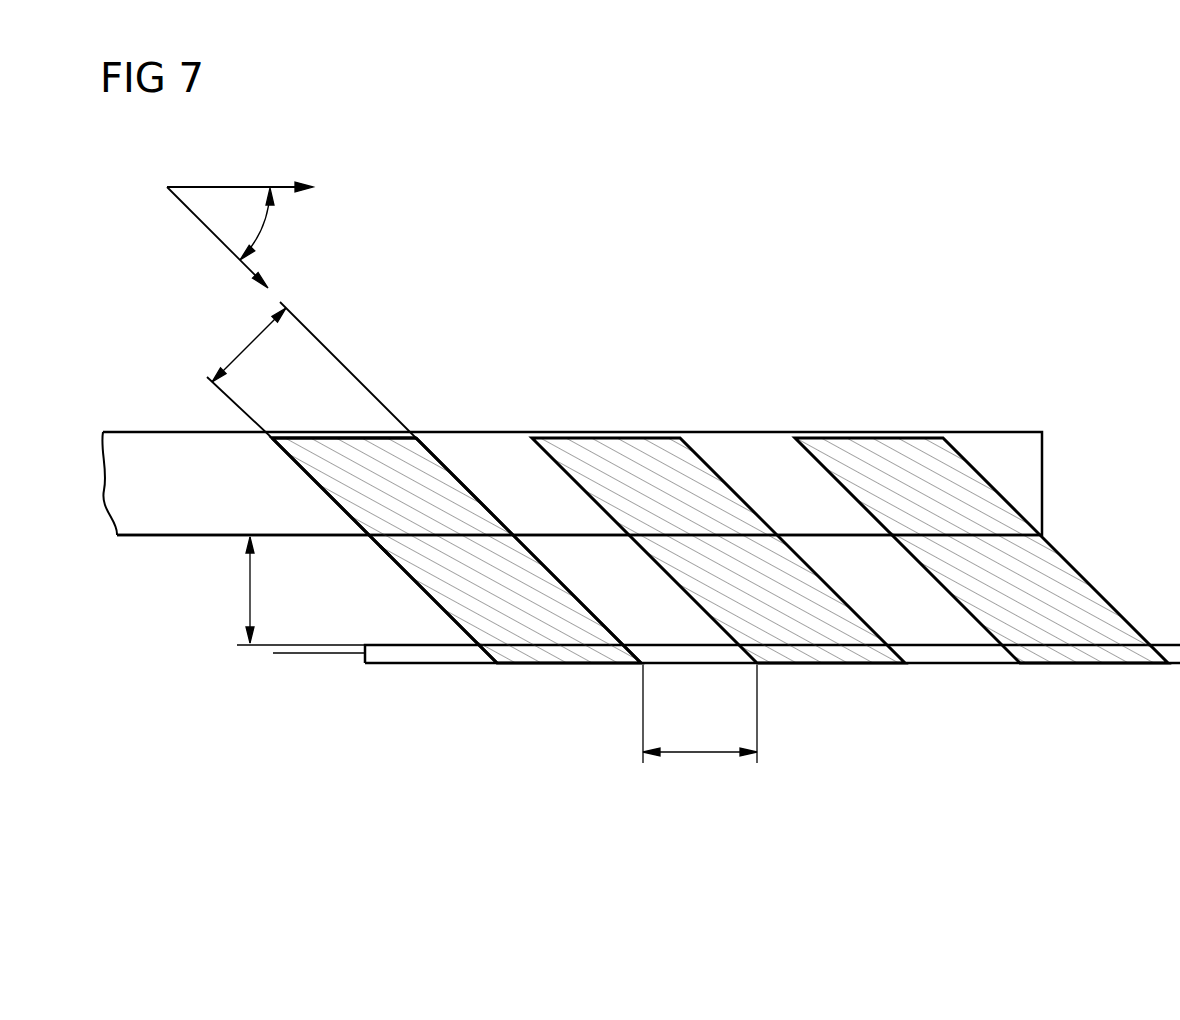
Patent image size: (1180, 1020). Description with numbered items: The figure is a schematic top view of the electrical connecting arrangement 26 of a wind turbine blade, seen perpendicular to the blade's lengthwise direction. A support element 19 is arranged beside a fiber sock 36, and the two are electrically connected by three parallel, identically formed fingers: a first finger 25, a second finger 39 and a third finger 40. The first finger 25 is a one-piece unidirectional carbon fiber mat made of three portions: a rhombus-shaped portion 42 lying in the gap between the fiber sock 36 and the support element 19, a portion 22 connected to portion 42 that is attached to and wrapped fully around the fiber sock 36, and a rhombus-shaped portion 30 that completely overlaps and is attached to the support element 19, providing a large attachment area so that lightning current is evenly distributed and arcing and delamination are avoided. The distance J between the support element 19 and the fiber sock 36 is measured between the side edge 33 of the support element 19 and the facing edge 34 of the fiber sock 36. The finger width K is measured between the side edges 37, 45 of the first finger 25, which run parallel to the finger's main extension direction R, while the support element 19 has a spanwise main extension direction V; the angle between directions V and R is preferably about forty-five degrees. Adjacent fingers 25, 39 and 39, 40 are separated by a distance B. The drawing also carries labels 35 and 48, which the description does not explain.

The support element 19 is at (146, 425).
The second portion of first finger 22 is at (525, 655).
The first finger 25 is at (385, 573).
The electrical connecting arrangement 26 is at (738, 300).
The third portion of first finger 30 is at (313, 447).
The side edge of support element 33 is at (160, 540).
The edge of fiber sock 34 is at (398, 655).
The edge of second sheet 35 is at (320, 655).
The fiber sock 36 is at (962, 678).
The side edge of first finger 37 is at (383, 555).
The second finger 39 is at (607, 447).
The third finger 40 is at (870, 447).
The first portion of first finger 42 is at (457, 600).
The side edge of first finger 45 is at (545, 558).
The upper surface of weld zone 48 is at (300, 437).
The main extension direction of support element V is at (228, 186).
The main extension direction of first finger R is at (198, 220).
The finger width K is at (250, 345).
The distance between support element and fiber sock J is at (248, 590).
The distance between adjacent fingers B is at (700, 750).